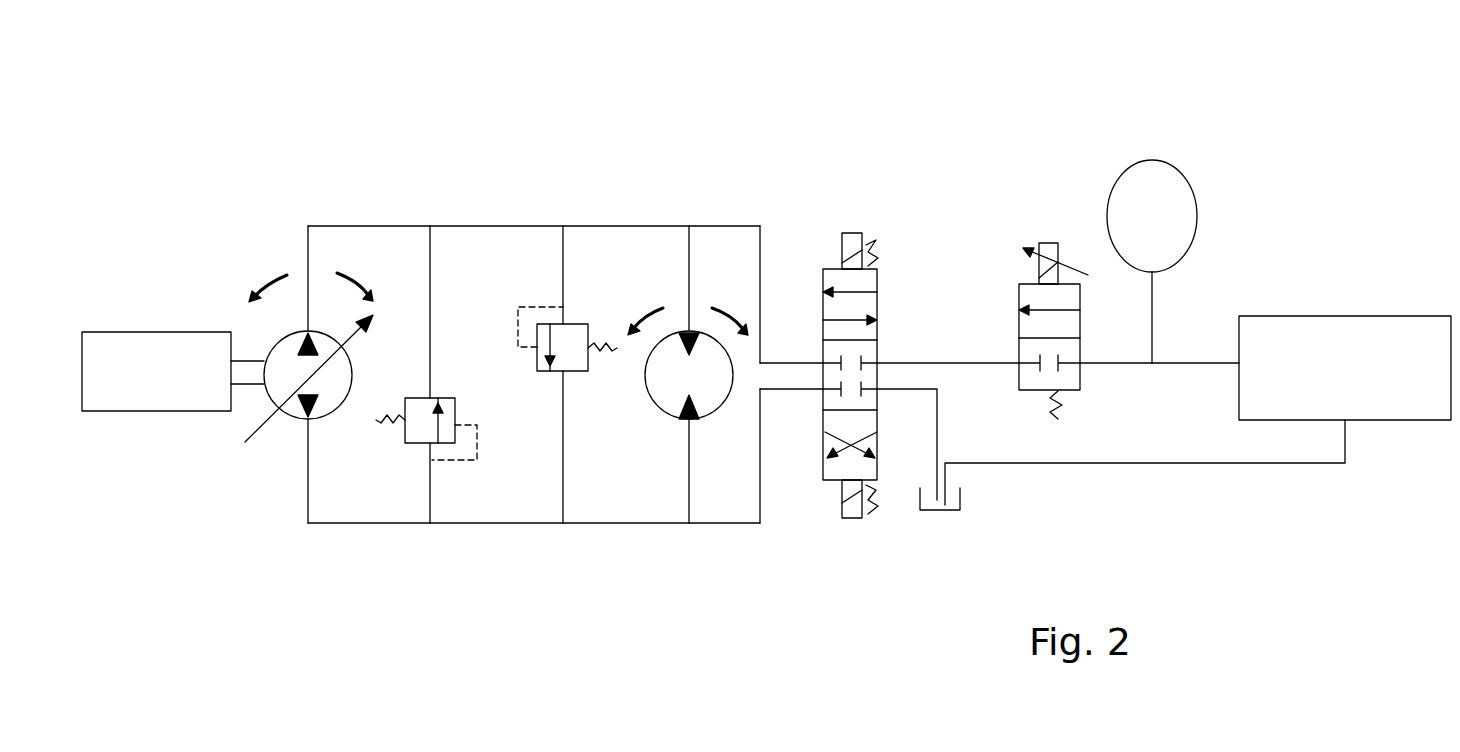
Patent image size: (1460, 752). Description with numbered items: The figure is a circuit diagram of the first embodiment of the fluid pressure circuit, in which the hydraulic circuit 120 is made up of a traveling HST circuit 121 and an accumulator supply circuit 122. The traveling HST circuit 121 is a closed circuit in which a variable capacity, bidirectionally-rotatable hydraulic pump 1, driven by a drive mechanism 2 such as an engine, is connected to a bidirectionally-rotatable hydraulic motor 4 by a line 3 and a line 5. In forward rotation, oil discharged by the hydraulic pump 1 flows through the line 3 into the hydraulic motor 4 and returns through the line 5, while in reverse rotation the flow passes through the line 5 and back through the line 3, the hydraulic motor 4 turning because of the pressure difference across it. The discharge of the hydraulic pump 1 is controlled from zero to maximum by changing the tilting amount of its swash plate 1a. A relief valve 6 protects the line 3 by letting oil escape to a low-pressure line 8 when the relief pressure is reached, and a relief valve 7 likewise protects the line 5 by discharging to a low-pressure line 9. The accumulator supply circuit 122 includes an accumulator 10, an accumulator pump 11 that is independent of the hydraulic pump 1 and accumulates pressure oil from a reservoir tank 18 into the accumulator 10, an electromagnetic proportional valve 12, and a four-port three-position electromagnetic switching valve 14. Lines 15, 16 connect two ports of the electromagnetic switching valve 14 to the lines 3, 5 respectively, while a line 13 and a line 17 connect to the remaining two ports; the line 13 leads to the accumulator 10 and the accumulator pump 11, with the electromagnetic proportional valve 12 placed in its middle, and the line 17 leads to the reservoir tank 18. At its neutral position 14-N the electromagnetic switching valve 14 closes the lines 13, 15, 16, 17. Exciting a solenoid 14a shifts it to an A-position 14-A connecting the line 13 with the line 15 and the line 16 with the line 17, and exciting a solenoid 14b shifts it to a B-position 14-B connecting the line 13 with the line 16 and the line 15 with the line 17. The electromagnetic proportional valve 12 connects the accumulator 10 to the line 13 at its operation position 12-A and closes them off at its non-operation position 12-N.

The hydraulic pump 1 is at (276, 356).
The swash plate 1a is at (262, 422).
The drive mechanism 2 is at (162, 332).
The line 3 is at (555, 226).
The hydraulic motor 4 is at (710, 416).
The line 5 is at (478, 523).
The relief valve 6 is at (565, 324).
The relief valve 7 is at (440, 398).
The low-pressure line 8 is at (564, 472).
The low-pressure line 9 is at (431, 308).
The accumulator 10 is at (1150, 160).
The accumulator pump 11 is at (1322, 316).
The electromagnetic proportional valve 12 is at (1063, 306).
The operation position 12-A is at (1082, 300).
The non-operation position 12-N is at (1082, 378).
The line 13 is at (905, 363).
The four-port three-position electromagnetic switching valve 14 is at (820, 414).
The solenoid 14a is at (851, 233).
The solenoid 14b is at (863, 512).
The A-position 14-A is at (823, 294).
The neutral position 14-N is at (823, 400).
The B-position 14-B is at (823, 442).
The line 15 is at (722, 226).
The line 16 is at (702, 523).
The line 17 is at (940, 442).
The reservoir tank 18 is at (962, 496).
The hydraulic circuit 120 is at (820, 374).
The traveling HST circuit 121 is at (471, 346).
The accumulator supply circuit 122 is at (1063, 249).